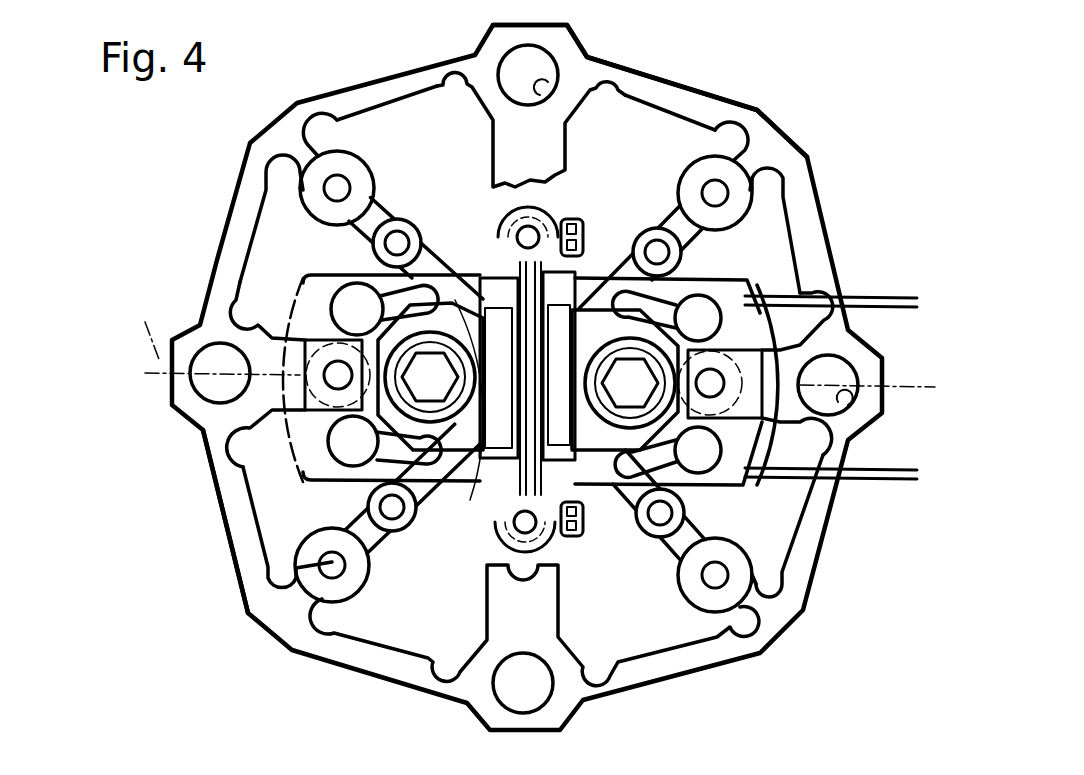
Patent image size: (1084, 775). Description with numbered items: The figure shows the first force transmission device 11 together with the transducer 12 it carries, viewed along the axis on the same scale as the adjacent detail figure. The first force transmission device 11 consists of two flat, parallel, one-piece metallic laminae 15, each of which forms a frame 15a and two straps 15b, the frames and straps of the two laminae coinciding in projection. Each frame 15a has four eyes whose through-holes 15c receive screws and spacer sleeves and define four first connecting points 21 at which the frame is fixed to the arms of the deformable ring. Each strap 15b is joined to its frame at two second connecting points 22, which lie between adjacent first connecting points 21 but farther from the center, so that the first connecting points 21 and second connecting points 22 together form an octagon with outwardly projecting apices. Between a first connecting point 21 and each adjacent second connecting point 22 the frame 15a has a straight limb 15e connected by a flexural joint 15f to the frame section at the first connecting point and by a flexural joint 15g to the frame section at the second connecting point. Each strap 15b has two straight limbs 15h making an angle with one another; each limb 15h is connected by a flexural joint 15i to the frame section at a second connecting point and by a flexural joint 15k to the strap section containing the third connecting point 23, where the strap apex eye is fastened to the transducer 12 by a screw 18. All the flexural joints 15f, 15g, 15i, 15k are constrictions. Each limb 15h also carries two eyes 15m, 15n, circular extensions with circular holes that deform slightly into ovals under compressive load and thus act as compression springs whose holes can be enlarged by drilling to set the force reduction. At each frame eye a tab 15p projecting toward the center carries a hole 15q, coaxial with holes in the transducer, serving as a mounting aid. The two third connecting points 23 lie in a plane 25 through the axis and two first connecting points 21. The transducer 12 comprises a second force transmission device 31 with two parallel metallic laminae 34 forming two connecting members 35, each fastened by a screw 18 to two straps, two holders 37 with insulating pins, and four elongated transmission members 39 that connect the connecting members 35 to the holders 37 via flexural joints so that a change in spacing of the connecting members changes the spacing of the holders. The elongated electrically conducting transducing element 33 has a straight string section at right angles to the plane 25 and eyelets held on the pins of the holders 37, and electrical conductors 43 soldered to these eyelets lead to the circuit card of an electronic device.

The first force transmission device 11 is at (240, 165).
The transducer 12 is at (293, 275).
The lamina 15 is at (268, 125).
The frame 15a is at (222, 513).
The strap 15b is at (388, 208).
The through-hole 15c is at (560, 75).
The straight limb 15e is at (412, 82).
The flexural joint 15f is at (448, 72).
The flexural joint 15g is at (320, 107).
The straight limb 15h is at (665, 222).
The flexural joint 15i is at (750, 150).
The flexural joint 15k is at (600, 272).
The eye 15m is at (692, 590).
The eye 15n is at (637, 517).
The tab 15p is at (312, 408).
The hole 15q is at (322, 412).
The screw 18 is at (485, 480).
The first connecting point 21 is at (533, 70).
The second connecting point 22 is at (288, 128).
The third connecting point 23 is at (428, 377).
The plane 25 is at (530, 338).
The second force transmission device 31 is at (297, 287).
The transducing element 33 is at (505, 268).
The lamina 34 is at (750, 300).
The connecting member 35 is at (302, 308).
The holder 37 is at (510, 222).
The transmission member 39 is at (460, 267).
The electrical conductor 43 is at (855, 298).